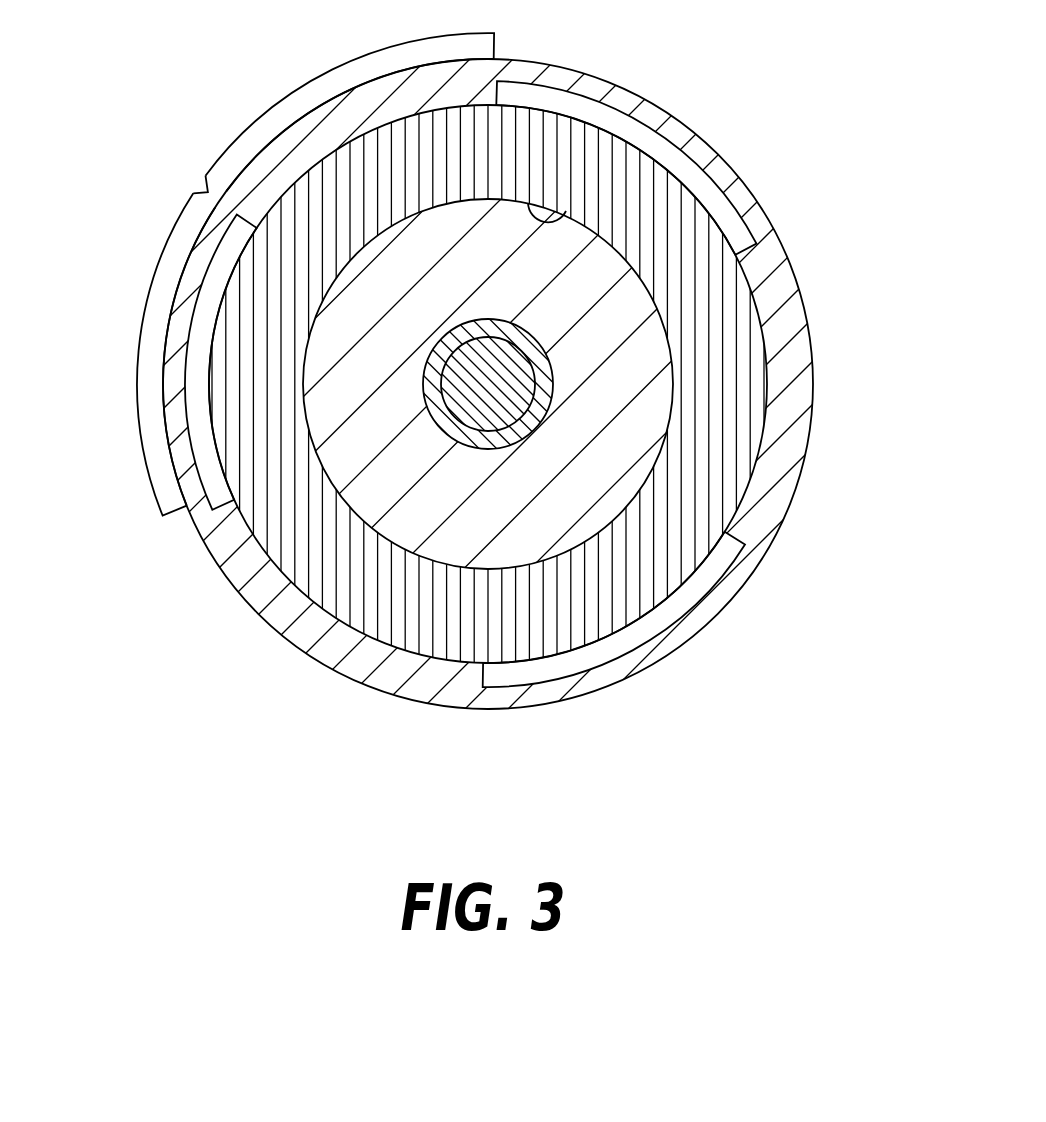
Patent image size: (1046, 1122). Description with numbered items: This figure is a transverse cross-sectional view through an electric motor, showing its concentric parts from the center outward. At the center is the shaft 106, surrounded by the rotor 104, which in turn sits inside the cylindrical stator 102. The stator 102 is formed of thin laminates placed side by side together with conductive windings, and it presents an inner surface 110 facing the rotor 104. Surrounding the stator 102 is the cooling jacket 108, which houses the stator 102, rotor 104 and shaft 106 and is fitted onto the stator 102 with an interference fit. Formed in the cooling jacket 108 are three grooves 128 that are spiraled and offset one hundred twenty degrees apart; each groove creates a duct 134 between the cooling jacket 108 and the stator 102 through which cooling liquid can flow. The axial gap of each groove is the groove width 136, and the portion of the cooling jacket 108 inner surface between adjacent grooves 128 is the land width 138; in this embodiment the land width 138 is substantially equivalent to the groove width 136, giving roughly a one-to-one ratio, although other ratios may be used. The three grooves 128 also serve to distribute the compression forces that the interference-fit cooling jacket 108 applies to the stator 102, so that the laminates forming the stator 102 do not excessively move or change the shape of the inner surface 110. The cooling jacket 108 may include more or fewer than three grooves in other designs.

The stator 102 is at (730, 280).
The rotor 104 is at (646, 402).
The shaft 106 is at (510, 408).
The cooling jacket 108 is at (783, 300).
The inner surface 110 is at (567, 212).
The grooves 128 is at (646, 629).
The ducts 134 is at (212, 482).
The groove width 136 is at (138, 323).
The land width 138 is at (323, 74).